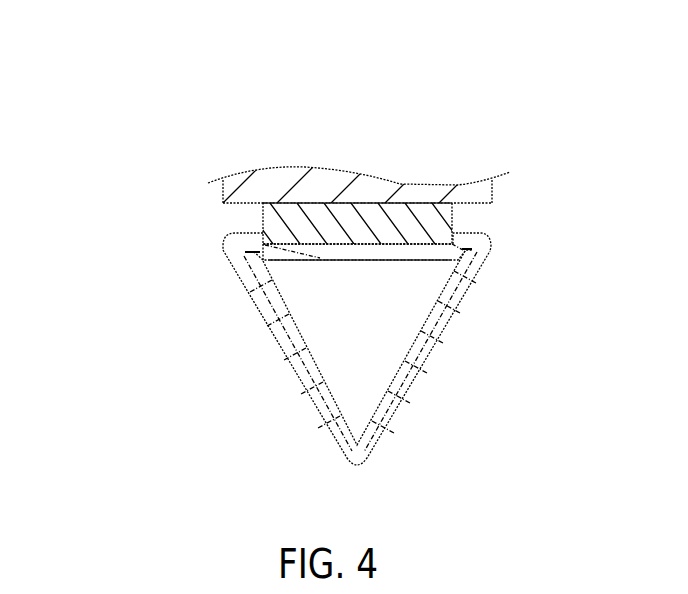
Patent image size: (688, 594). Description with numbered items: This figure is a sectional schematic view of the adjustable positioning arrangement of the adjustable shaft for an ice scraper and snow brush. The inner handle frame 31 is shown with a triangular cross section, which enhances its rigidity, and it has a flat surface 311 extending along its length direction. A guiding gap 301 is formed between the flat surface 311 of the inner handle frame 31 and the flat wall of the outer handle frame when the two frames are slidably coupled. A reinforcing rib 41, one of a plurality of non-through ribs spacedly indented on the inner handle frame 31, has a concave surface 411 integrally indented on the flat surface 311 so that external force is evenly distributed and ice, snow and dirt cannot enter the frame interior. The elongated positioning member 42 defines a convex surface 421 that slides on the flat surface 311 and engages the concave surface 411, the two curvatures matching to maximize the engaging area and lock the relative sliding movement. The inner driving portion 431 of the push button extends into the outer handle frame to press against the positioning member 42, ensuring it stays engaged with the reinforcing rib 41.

The inner handle frame 31 is at (427, 373).
The guiding gap 301 is at (217, 223).
The flat surface 311 is at (498, 224).
The reinforcing rib 41 is at (268, 262).
The concave surface 411 is at (339, 263).
The positioning member 42 is at (357, 228).
The convex surface 421 is at (397, 232).
The inner driving portion 431 is at (270, 180).